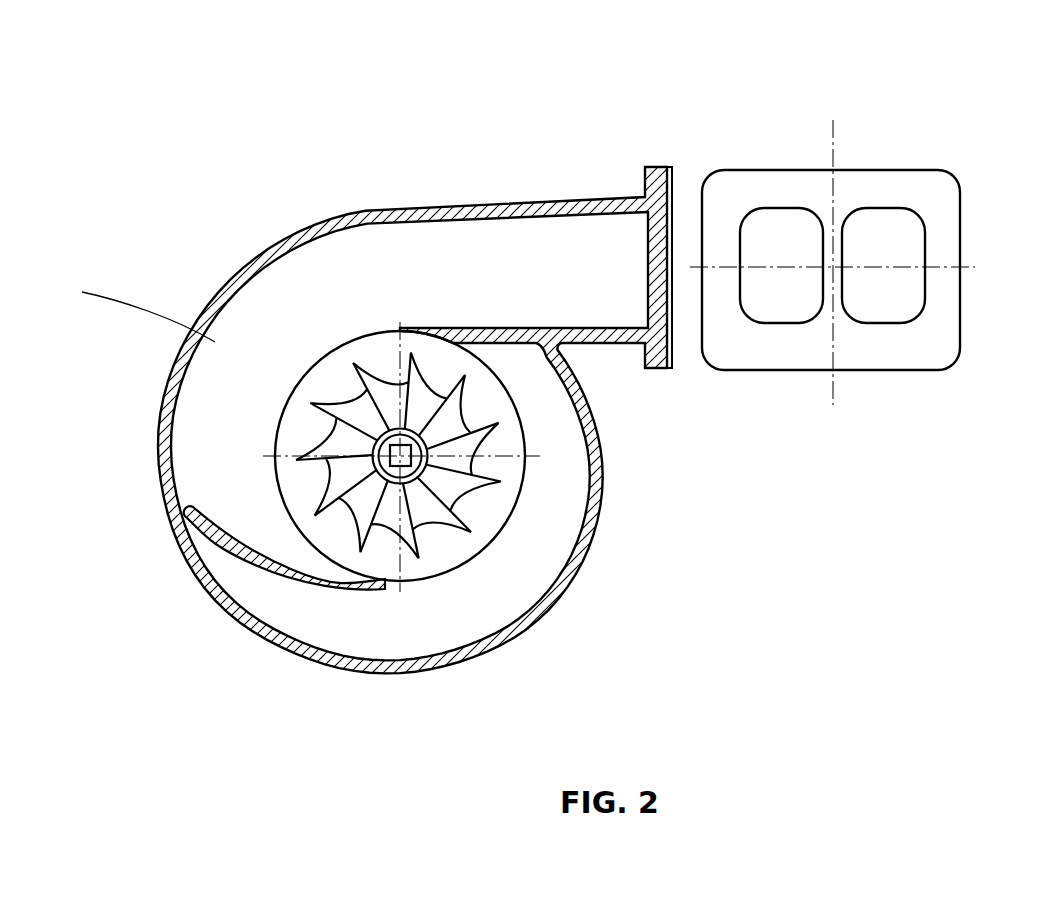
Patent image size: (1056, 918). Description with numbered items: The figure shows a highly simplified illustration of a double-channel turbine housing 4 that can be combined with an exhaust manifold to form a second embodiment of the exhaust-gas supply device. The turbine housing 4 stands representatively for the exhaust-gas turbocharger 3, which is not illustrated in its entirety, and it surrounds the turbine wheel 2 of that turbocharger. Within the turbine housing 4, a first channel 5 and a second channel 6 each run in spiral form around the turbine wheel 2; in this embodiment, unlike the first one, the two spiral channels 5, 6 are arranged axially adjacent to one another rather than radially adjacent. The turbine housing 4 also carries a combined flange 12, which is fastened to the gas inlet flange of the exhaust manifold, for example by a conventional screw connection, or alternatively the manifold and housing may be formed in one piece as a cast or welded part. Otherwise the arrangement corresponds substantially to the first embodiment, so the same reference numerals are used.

The turbine wheel 2 is at (490, 427).
The exhaust-gas turbocharger 3 is at (177, 256).
The turbine housing 4 is at (315, 212).
The first channel 5 is at (785, 217).
The second channel 6 is at (547, 543).
The combined flange 12 is at (657, 178).